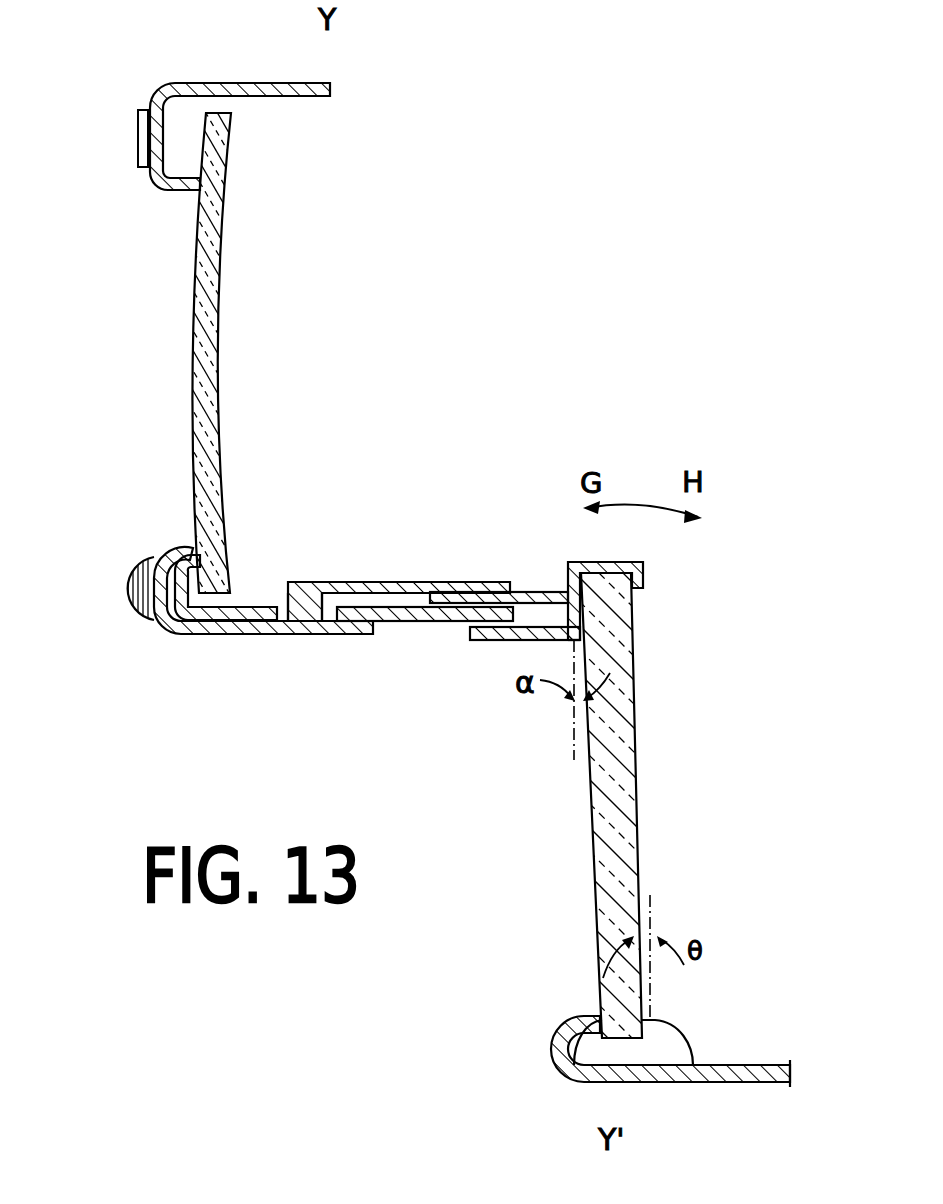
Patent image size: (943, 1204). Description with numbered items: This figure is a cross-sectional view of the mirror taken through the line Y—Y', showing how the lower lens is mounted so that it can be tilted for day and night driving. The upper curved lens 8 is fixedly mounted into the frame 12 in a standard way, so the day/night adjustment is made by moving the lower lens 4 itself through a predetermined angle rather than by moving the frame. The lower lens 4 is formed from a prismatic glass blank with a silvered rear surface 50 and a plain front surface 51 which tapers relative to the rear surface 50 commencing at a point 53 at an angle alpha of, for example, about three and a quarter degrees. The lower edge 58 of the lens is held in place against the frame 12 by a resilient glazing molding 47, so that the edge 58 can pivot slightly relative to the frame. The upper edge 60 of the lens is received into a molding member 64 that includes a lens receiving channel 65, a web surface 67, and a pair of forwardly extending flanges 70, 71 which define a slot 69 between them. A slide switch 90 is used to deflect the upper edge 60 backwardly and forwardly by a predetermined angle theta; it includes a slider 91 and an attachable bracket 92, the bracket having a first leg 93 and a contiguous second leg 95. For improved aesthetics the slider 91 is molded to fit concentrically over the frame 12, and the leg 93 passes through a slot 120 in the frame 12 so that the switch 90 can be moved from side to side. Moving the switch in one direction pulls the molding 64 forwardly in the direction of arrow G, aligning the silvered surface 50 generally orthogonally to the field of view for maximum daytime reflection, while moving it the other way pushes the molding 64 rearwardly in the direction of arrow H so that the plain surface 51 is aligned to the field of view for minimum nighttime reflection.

The lower lens 4 is at (617, 795).
The upper curved lens 8 is at (222, 326).
The frame 12 is at (150, 181).
The resilient glazing molding 47 is at (690, 1032).
The silvered rear surface 50 is at (640, 840).
The plain front surface 51 is at (588, 878).
The point 53 is at (580, 640).
The lower edge 58 is at (625, 1010).
The upper edge 60 is at (635, 600).
The molding member 64 is at (640, 562).
The lens receiving channel 65 is at (590, 585).
The web surface 67 is at (532, 592).
The slot 69 is at (535, 641).
The flange 70 is at (510, 590).
The flange 71 is at (490, 641).
The slide switch 90 is at (248, 642).
The slider 91 is at (170, 622).
The attachable bracket 92 is at (370, 582).
The first leg 93 is at (300, 582).
The second leg 95 is at (348, 582).
The slot 120 is at (262, 603).